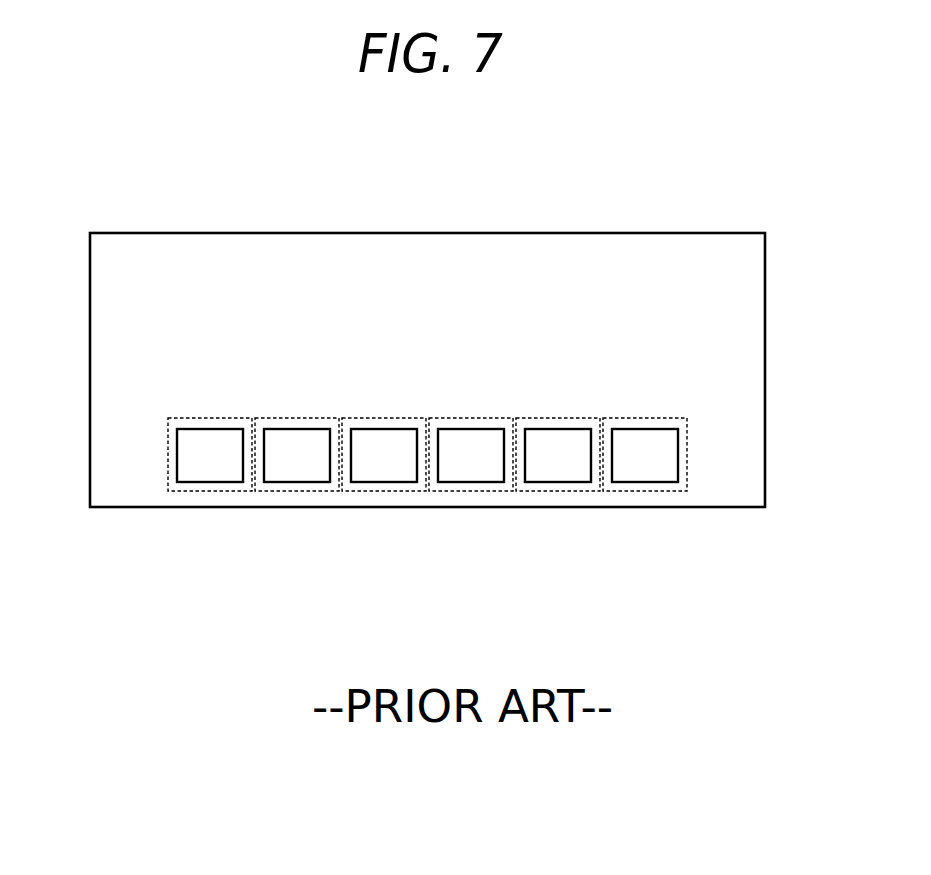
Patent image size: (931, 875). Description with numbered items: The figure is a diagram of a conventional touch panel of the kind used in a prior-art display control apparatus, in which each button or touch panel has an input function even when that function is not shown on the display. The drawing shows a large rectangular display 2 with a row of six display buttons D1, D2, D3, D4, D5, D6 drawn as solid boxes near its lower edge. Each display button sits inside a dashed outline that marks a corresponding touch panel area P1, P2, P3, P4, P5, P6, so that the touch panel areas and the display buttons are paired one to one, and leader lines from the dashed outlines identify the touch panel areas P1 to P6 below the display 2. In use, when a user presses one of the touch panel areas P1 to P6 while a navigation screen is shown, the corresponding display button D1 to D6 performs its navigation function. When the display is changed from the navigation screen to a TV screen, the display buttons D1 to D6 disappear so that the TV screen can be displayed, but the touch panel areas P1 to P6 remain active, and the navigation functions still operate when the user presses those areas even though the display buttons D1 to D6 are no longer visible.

The display device (prior art) 2 is at (417, 233).
The touch panel area P1 is at (210, 492).
The touch panel area P2 is at (297, 492).
The touch panel area P3 is at (384, 492).
The touch panel area P4 is at (471, 492).
The touch panel area P5 is at (558, 492).
The touch panel area P6 is at (645, 492).
The display button D1 is at (210, 455).
The display button D2 is at (297, 455).
The display button D3 is at (384, 455).
The display button D4 is at (471, 455).
The display button D5 is at (558, 455).
The display button D6 is at (645, 455).